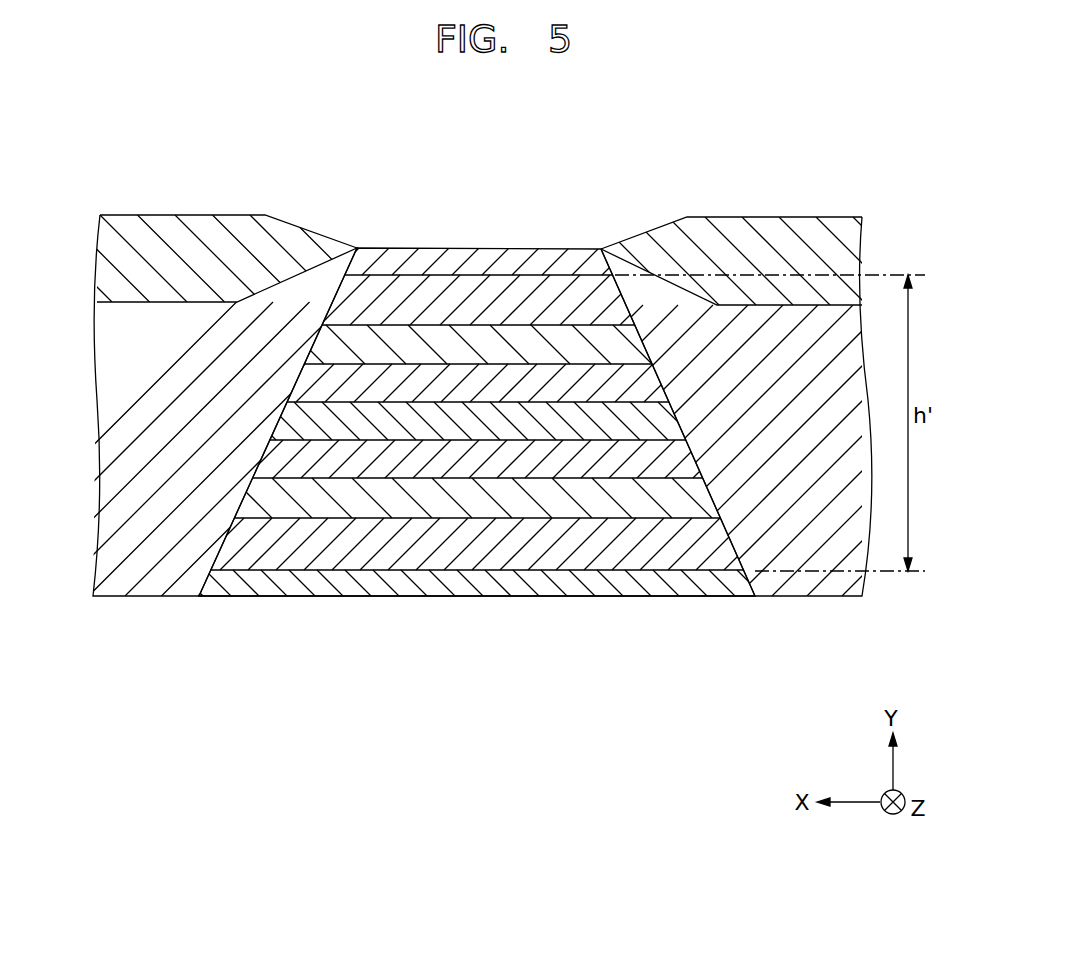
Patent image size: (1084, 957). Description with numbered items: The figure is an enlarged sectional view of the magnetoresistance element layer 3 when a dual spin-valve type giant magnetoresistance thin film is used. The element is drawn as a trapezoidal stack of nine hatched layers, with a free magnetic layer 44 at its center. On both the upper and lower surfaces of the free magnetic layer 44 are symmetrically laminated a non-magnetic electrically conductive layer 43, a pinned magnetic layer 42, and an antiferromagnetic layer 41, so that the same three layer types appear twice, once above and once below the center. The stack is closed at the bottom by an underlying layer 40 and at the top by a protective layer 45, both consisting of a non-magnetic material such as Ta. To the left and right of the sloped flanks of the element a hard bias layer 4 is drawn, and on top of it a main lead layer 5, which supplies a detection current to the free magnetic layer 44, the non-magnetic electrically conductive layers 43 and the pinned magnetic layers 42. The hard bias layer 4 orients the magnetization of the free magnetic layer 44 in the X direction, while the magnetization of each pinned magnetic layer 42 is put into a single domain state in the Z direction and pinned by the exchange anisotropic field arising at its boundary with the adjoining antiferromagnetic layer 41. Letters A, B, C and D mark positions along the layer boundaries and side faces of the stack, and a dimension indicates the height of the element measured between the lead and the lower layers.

The magnetoresistance element layer 3 is at (546, 180).
The hard bias layer 4 is at (147, 583).
The main lead layer 5 is at (197, 247).
The underlying layer 40 is at (577, 593).
The antiferromagnetic layer 41 is at (425, 286).
The pinned magnetic layer 42 is at (456, 340).
The non-magnetic electrically conductive layer 43 is at (510, 392).
The free magnetic layer 44 is at (312, 425).
The protective layer 45 is at (375, 248).
The position A is at (612, 478).
The position B is at (657, 442).
The position C is at (603, 405).
The position D is at (556, 365).